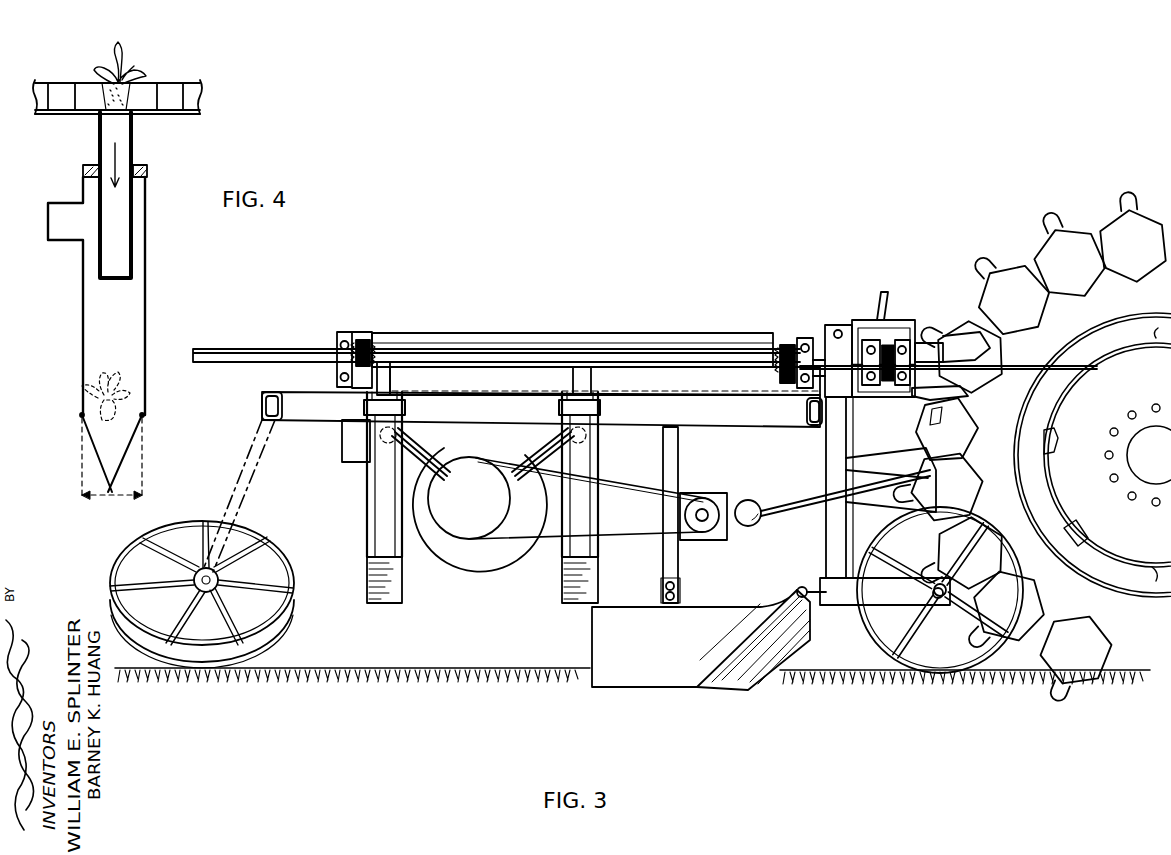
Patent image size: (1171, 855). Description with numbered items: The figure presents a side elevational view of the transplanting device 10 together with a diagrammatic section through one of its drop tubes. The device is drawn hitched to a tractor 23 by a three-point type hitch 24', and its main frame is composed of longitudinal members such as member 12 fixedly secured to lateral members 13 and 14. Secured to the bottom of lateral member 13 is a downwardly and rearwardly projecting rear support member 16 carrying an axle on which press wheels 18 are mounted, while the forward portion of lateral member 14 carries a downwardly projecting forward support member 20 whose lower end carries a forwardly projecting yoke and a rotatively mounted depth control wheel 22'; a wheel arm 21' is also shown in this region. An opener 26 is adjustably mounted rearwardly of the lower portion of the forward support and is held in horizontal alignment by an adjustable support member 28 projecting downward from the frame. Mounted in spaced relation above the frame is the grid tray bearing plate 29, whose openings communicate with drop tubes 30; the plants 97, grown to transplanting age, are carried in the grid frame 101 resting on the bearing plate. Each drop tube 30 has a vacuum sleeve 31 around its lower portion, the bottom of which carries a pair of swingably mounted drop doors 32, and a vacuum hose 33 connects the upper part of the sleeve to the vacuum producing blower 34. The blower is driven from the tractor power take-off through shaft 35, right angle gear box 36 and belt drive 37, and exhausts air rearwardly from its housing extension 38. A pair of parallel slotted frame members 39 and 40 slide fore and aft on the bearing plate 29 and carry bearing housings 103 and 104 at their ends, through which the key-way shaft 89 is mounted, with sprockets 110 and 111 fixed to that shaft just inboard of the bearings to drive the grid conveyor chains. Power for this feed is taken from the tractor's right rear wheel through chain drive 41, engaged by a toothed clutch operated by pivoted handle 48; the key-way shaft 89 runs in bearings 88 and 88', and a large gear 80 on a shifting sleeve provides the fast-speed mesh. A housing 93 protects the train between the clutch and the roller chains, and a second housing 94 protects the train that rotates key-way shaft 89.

In FIG. 3, the transplanting device 10 is at (596, 333).
In FIG. 3, the longitudinal member 12 is at (308, 418).
In FIG. 3, the lateral member 13 is at (262, 400).
In FIG. 3, the lateral member 14 is at (808, 420).
In FIG. 3, the rear support member 16 is at (228, 499).
In FIG. 3, the press wheel 18 is at (289, 592).
In FIG. 3, the forward support member 20 is at (826, 547).
In FIG. 3, the rear wheel arm 21' is at (884, 616).
In FIG. 3, the depth control wheel 22' is at (925, 619).
In FIG. 3, the tractor 23 is at (1060, 234).
In FIG. 3, the three-point hitch 24' is at (966, 318).
In FIG. 3, the opener 26 is at (610, 640).
In FIG. 3, the adjustable support member 28 is at (678, 559).
In FIG. 4, the grid tray bearing plate 29 is at (74, 113).
In FIG. 3, the grid tray bearing plate 29 is at (270, 346).
In FIG. 4, the drop tube 30 is at (136, 152).
In FIG. 3, the drop tube 30 is at (398, 369).
In FIG. 4, the vacuum sleeve 31 is at (82, 351).
In FIG. 3, the vacuum sleeve 31 is at (370, 526).
In FIG. 4, the drop door 32 is at (60, 473).
In FIG. 3, the drop door 32 is at (562, 596).
In FIG. 4, the vacuum hose 33 is at (74, 243).
In FIG. 3, the vacuum hose 33 is at (428, 462).
In FIG. 3, the vacuum producing blower 34 is at (480, 512).
In FIG. 3, the shaft 35 is at (806, 503).
In FIG. 3, the right angle gear box 36 is at (713, 493).
In FIG. 3, the belt drive 37 is at (610, 531).
In FIG. 3, the housing extension 38 is at (346, 460).
In FIG. 3, the slotted frame member 39 is at (348, 333).
In FIG. 3, the slotted frame member 40 is at (828, 344).
In FIG. 3, the chain drive 41 is at (952, 388).
In FIG. 3, the pivoted handle 48 is at (885, 304).
In FIG. 3, the gear 80 is at (884, 395).
In FIG. 3, the bearing 88 is at (882, 379).
In FIG. 3, the bearing 88' is at (947, 429).
In FIG. 3, the key-way shaft 89 is at (714, 360).
In FIG. 3, the housing 93 is at (862, 322).
In FIG. 3, the second housing 94 is at (933, 341).
In FIG. 4, the plant 97 is at (130, 60).
In FIG. 3, the grid frame 101 is at (599, 342).
In FIG. 3, the bearing housing 103 is at (336, 341).
In FIG. 3, the bearing housing 104 is at (790, 346).
In FIG. 3, the sprocket 110 is at (376, 348).
In FIG. 3, the sprocket 111 is at (772, 372).